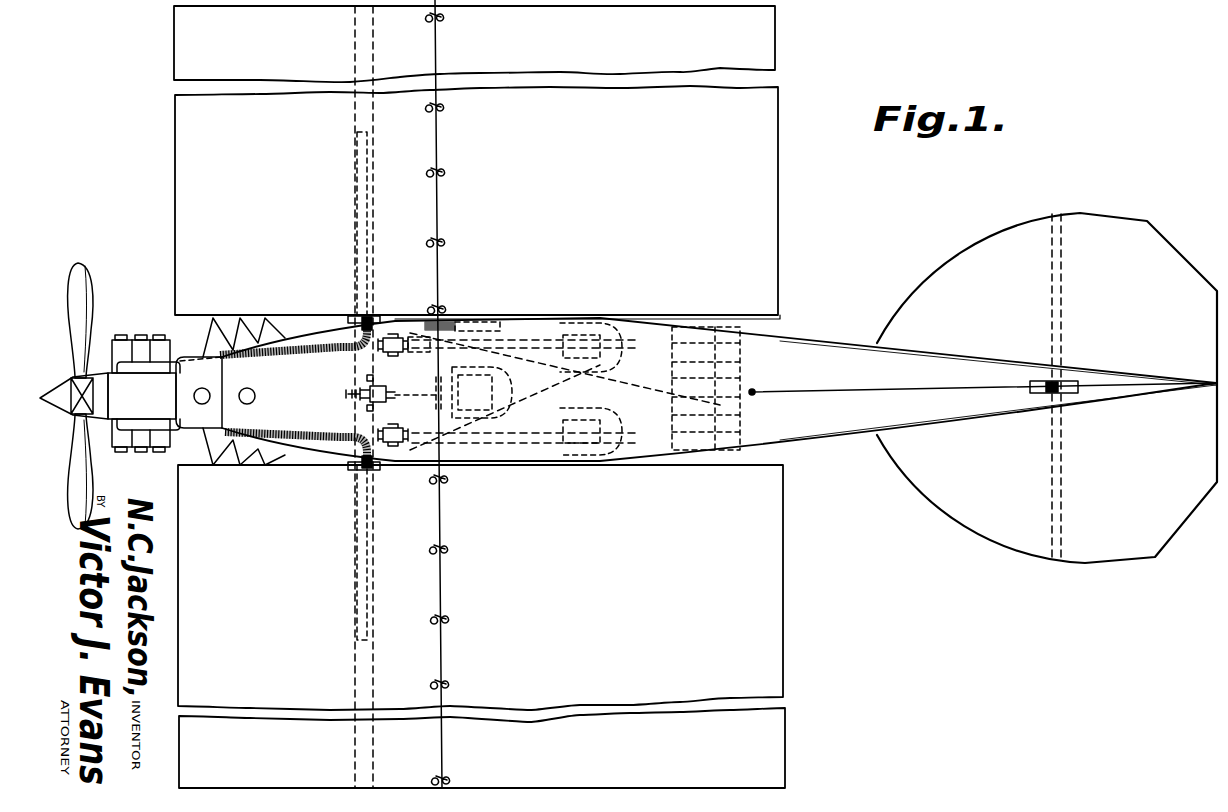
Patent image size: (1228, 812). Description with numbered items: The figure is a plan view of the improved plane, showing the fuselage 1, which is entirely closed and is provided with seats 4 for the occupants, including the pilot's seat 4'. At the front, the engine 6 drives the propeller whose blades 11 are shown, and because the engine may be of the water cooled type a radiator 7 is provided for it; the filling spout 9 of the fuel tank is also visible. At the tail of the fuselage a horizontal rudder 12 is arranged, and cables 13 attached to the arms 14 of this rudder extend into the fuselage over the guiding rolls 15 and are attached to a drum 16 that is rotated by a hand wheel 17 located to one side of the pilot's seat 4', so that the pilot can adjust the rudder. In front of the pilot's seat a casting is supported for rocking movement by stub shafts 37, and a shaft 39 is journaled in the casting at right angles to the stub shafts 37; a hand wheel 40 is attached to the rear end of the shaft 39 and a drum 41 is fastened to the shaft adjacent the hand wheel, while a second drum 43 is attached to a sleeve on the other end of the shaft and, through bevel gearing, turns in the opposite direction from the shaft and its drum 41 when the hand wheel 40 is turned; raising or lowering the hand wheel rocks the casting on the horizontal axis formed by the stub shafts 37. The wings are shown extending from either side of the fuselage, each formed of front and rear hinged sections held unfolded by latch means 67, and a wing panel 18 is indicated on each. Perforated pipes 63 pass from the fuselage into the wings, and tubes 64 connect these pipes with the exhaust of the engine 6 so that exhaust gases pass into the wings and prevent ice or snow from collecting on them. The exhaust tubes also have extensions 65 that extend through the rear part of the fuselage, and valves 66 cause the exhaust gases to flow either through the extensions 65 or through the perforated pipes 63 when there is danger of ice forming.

The fuselage 1 is at (651, 452).
The seats 4 is at (650, 389).
The pilot's seat 4' is at (494, 392).
The engine 6 is at (150, 442).
The radiator 7 is at (208, 418).
The filling spout 9 is at (253, 392).
The propeller blades 11 is at (78, 462).
The horizontal rudder 12 is at (1080, 230).
The cables 13 is at (933, 381).
The arms 14 is at (1054, 386).
The guiding rolls 15 is at (417, 354).
The drum 16 is at (450, 316).
The hand wheel 17 is at (480, 320).
The wing 18 is at (479, 397).
The stub shafts 37 is at (366, 378).
The shaft 39 is at (415, 408).
The hand wheel 40 is at (393, 390).
The drum 41 is at (385, 385).
The drum 43 is at (355, 397).
The perforated pipes 63 is at (357, 218).
The tubes 64 is at (318, 351).
The extensions 65 is at (510, 352).
The valves 66 is at (384, 353).
The latch means 67 is at (440, 240).